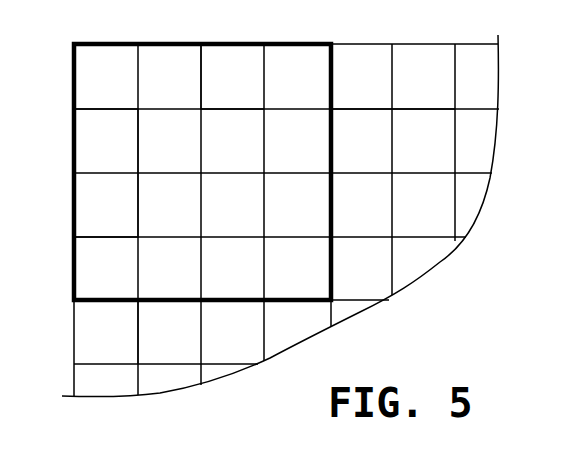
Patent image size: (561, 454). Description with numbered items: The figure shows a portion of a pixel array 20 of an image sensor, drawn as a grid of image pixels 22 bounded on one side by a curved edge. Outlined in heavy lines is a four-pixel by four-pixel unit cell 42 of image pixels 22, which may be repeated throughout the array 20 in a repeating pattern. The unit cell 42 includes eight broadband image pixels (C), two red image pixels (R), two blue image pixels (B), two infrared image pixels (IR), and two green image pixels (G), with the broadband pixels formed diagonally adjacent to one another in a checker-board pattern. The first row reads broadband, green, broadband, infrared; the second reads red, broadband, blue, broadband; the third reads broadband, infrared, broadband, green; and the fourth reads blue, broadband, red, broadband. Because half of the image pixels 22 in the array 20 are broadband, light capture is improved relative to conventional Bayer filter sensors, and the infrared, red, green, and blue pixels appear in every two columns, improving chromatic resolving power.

The pixel array 20 is at (403, 315).
The image sensor pixels 22 is at (86, 321).
The unit cell 42 is at (101, 45).